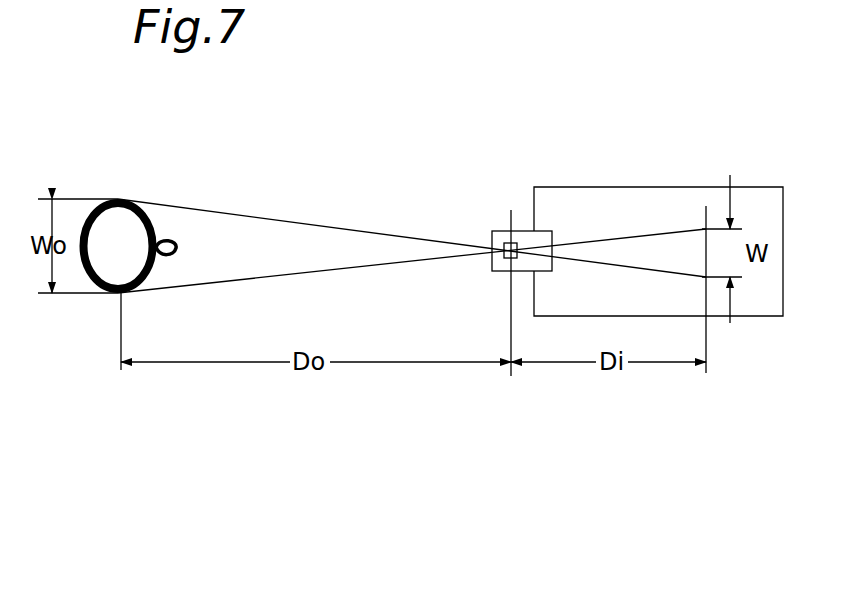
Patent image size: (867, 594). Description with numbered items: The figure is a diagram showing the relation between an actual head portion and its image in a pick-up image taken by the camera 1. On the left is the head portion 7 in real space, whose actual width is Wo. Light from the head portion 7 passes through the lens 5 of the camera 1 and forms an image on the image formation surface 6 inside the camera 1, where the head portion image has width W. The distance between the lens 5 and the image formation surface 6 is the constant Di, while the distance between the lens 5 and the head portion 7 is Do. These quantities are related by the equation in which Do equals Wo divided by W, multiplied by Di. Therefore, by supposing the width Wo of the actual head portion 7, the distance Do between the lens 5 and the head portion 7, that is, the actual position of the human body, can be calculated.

The camera 1 is at (548, 187).
The lens 5 is at (499, 230).
The image formation surface 6 is at (703, 216).
The head portion 7 is at (118, 199).